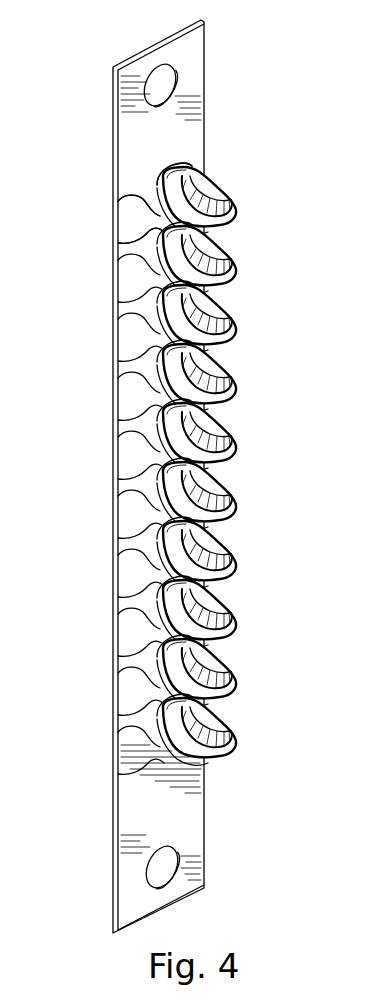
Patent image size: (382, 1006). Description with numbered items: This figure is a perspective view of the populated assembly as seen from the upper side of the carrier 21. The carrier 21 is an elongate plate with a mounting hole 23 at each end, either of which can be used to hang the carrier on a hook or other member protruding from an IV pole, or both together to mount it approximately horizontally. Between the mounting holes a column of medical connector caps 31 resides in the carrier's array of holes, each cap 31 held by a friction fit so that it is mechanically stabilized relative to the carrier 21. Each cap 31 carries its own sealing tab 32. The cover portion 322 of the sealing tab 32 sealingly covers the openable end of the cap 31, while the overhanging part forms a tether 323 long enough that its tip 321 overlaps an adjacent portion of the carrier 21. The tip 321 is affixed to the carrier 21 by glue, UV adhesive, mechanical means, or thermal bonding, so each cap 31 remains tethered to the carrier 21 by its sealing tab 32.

The carrier 21 is at (181, 121).
The mounting hole 23 is at (168, 78).
The medical connector cap 31 is at (181, 243).
The sealing tab 32 is at (167, 243).
The tip 321 is at (127, 223).
The cover portion 322 is at (170, 173).
The tether 323 is at (152, 207).